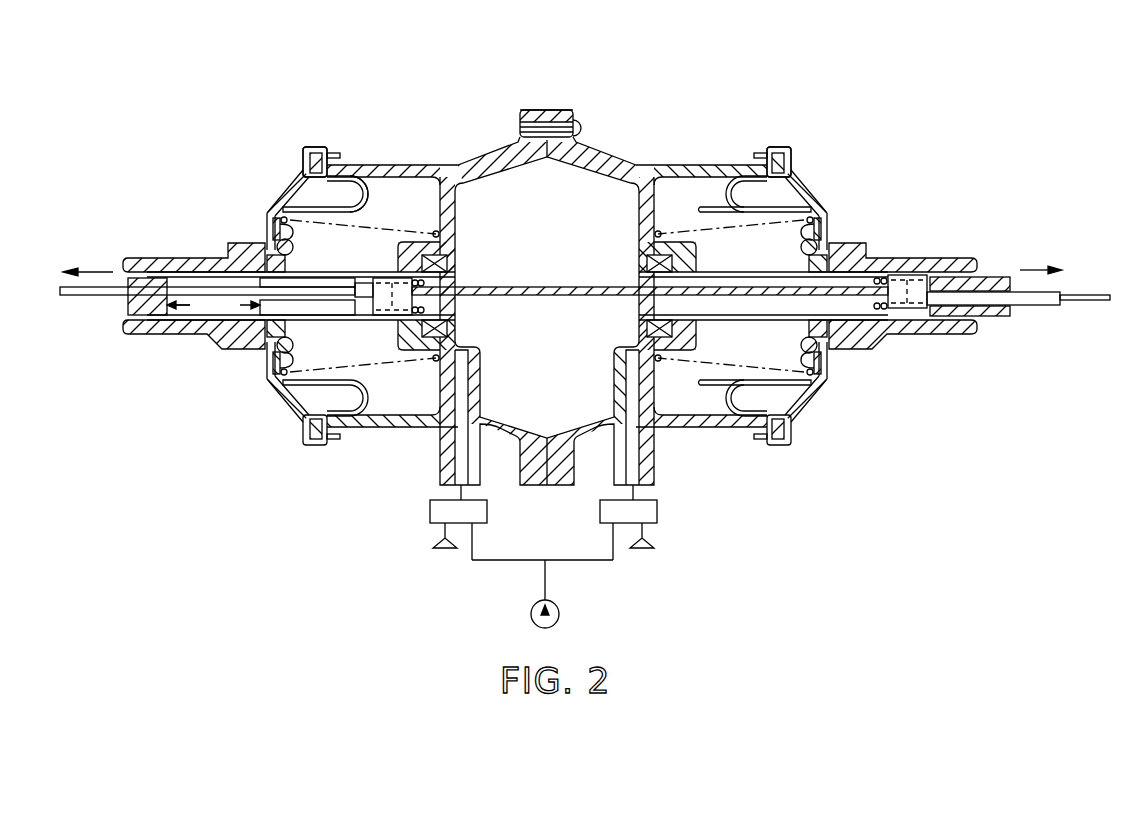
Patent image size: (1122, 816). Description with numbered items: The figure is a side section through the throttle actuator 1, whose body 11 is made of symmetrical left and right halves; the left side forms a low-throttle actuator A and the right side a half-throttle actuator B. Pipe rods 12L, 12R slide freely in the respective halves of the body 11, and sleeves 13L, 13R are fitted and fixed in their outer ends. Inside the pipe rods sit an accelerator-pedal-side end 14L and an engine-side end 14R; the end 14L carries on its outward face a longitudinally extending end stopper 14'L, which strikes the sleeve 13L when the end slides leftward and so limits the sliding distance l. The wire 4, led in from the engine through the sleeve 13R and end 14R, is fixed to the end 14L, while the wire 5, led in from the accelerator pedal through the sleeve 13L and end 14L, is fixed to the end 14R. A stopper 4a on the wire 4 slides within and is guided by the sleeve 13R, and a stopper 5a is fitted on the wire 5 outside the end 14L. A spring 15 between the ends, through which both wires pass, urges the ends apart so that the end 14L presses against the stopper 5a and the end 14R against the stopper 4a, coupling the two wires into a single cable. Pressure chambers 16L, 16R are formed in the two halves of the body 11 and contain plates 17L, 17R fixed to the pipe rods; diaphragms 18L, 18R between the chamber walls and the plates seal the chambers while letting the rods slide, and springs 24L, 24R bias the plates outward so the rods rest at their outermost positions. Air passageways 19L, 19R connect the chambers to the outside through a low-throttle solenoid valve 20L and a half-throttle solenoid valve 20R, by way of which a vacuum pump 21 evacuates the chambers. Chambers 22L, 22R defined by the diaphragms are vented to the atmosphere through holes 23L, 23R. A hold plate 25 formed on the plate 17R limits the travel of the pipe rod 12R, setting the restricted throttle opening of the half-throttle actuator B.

The throttle actuator 1 is at (585, 58).
The low-throttle actuator A is at (250, 128).
The half-throttle actuator B is at (852, 158).
The wire 4 is at (1088, 301).
The stopper 4a is at (1037, 305).
The wire 5 is at (93, 297).
The stopper 5a is at (368, 282).
The body 11 is at (603, 163).
The pipe rod 12L is at (203, 257).
The pipe rod 12R is at (920, 333).
The sleeve 13L is at (133, 301).
The sleeve 13R is at (977, 257).
The end 14L is at (383, 320).
The end 14R is at (902, 315).
The end stopper 14'L is at (261, 317).
The spring 15 is at (452, 284).
The pressure chamber 16L is at (400, 188).
The pressure chamber 16R is at (667, 188).
The plate 17L is at (291, 236).
The plate 17R is at (803, 226).
The diaphragm 18L is at (360, 197).
The diaphragm 18R is at (732, 190).
The air passageway 19L is at (460, 447).
The air passageway 19R is at (630, 457).
The low-throttle solenoid valve 20L is at (430, 515).
The half-throttle solenoid valve 20R is at (656, 517).
The vacuum pump 21 is at (562, 617).
The chamber 22L is at (343, 177).
The chamber 22R is at (800, 385).
The hole 23L is at (293, 187).
The hole 23R is at (813, 393).
The spring 24L is at (405, 370).
The spring 24R is at (708, 348).
The hold plate 25 is at (699, 213).
The sliding distance l is at (212, 307).